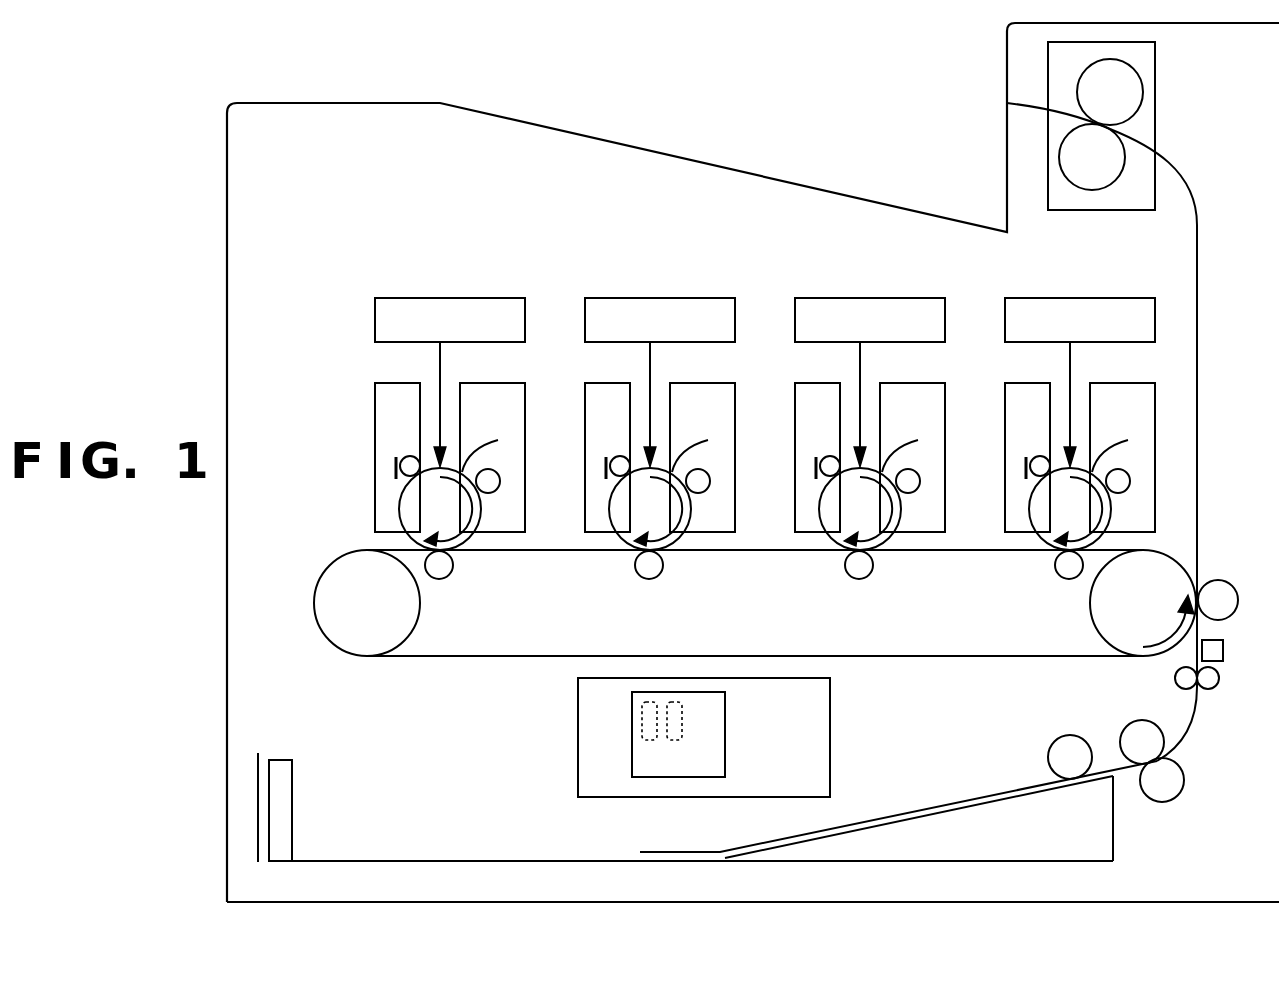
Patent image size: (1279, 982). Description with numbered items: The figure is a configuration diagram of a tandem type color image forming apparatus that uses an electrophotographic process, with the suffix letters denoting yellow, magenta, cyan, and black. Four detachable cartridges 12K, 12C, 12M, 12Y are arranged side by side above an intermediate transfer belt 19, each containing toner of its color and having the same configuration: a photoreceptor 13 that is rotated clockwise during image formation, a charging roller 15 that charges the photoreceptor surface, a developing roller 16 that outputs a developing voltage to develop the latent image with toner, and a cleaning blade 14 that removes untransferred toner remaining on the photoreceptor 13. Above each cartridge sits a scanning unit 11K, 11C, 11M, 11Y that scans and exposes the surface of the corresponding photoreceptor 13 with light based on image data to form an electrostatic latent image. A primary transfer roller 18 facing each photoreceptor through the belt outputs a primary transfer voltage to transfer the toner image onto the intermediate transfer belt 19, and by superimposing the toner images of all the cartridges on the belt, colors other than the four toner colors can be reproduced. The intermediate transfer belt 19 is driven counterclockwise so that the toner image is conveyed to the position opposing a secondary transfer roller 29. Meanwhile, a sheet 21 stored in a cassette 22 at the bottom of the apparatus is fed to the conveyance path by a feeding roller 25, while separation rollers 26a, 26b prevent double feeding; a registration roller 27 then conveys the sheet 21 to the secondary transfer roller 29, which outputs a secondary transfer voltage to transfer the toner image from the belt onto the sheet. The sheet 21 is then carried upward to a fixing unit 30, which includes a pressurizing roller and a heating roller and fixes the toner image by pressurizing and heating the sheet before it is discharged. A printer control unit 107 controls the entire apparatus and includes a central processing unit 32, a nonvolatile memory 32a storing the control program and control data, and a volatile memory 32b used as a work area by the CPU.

The scanning unit 11K is at (448, 297).
The scanning unit 11C is at (658, 297).
The scanning unit 11M is at (868, 297).
The scanning unit 11Y is at (1078, 297).
The cartridge 12K is at (407, 446).
The cartridge 12C is at (573, 372).
The cartridge 12M is at (783, 372).
The cartridge 12Y is at (993, 372).
The photoreceptor 13 is at (399, 505).
The cleaning blade 14 is at (397, 481).
The charging roller 15 is at (402, 458).
The developing roller 16 is at (500, 474).
The primary transfer roller 18 is at (452, 576).
The intermediate transfer belt 19 is at (437, 658).
The sheet 21 is at (858, 822).
The cassette 22 is at (1113, 831).
The feeding roller 25 is at (1070, 735).
The separation roller 26a is at (1140, 720).
The separation roller 26b is at (1186, 780).
The registration roller 27 is at (1209, 690).
The secondary transfer roller 29 is at (1225, 585).
The fixing unit 30 is at (1157, 100).
The central processing unit (CPU) 32 is at (683, 734).
The nonvolatile memory 32a is at (640, 722).
The volatile memory 32b is at (688, 730).
The printer control unit 107 is at (666, 737).